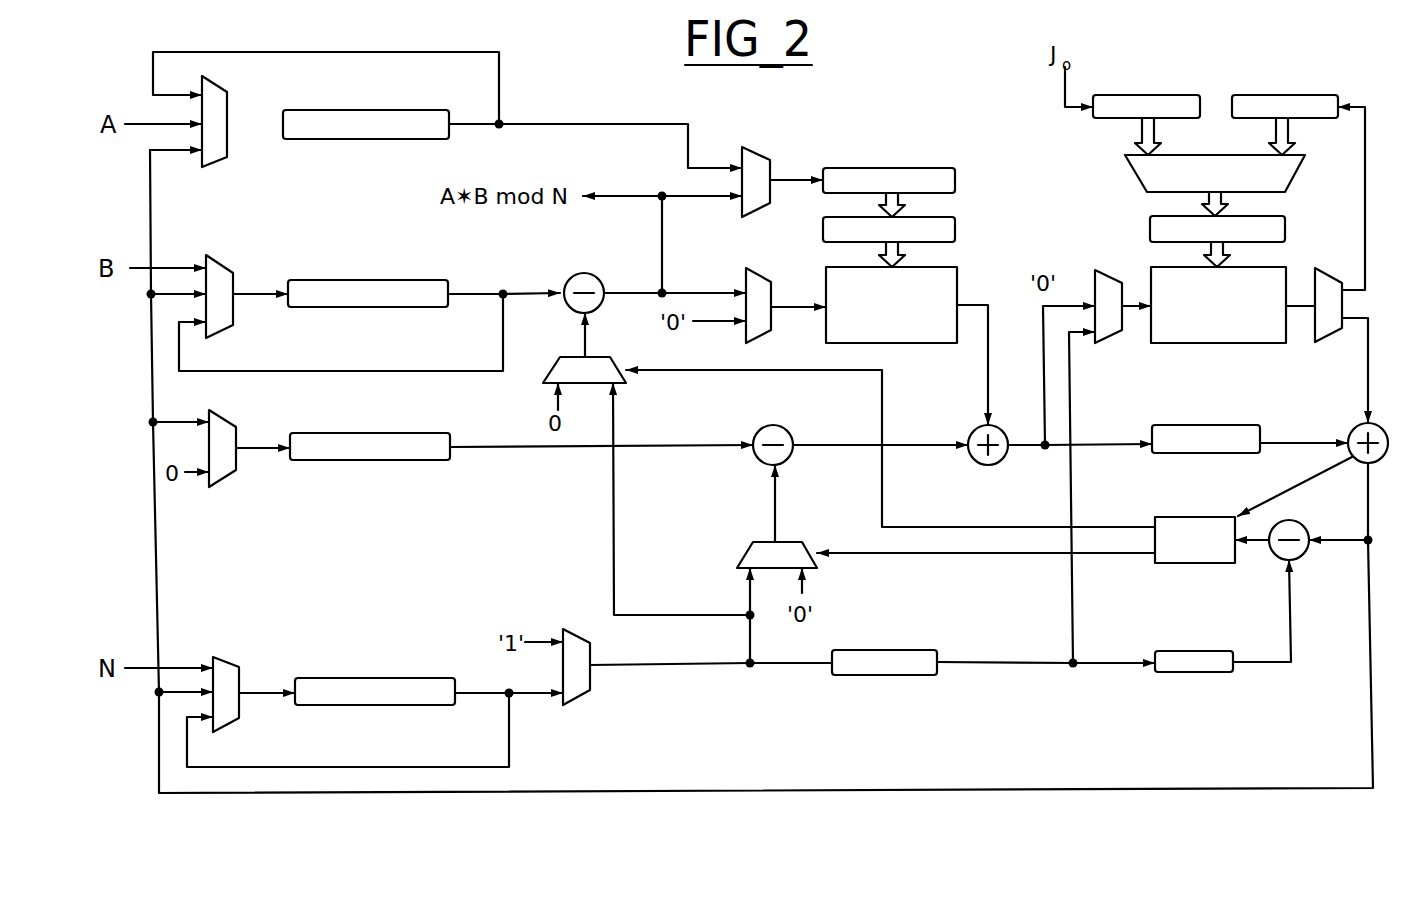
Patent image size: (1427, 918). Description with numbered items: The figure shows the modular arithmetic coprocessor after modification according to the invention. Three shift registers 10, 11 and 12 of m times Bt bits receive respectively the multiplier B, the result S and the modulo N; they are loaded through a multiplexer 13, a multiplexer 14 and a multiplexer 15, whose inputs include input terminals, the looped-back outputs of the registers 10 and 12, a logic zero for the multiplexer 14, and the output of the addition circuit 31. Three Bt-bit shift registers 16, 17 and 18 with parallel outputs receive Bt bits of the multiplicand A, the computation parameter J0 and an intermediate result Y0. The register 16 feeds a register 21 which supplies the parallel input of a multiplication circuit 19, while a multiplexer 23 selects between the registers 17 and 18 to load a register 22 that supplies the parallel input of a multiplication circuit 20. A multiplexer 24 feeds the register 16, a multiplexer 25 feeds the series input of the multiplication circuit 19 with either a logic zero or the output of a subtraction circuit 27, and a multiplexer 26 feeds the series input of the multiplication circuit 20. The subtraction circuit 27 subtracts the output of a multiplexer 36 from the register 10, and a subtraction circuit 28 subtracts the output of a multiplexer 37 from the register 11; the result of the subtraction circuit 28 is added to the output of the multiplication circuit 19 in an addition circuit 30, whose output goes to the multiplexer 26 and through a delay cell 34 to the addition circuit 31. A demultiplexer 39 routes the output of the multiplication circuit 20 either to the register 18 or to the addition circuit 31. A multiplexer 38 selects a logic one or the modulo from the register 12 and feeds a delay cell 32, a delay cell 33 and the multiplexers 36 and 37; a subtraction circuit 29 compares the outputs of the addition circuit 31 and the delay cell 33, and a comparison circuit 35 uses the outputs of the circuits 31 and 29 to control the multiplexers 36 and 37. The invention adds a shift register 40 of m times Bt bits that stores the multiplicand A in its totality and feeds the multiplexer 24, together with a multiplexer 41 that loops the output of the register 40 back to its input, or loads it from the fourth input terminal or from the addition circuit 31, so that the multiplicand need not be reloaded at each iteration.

The shift register 10 is at (353, 280).
The shift register 11 is at (365, 460).
The shift register 12 is at (375, 678).
The multiplexer 13 is at (222, 257).
The multiplexer 14 is at (228, 484).
The multiplexer 15 is at (228, 657).
The shift register 16 is at (955, 180).
The shift register 17 is at (1153, 95).
The shift register 18 is at (1287, 95).
The multiplication circuit 19 is at (925, 343).
The multiplication circuit 20 is at (1215, 343).
The register 21 is at (955, 229).
The register 22 is at (1285, 229).
The multiplexer 23 is at (1300, 172).
The multiplexer 24 is at (757, 147).
The multiplexer 25 is at (757, 268).
The multiplexer 26 is at (1100, 270).
The subtraction circuit 27 is at (582, 273).
The subtraction circuit 28 is at (778, 425).
The subtraction circuit 29 is at (1295, 520).
The addition circuit 30 is at (982, 465).
The addition circuit 31 is at (1388, 450).
The delay cell 32 is at (885, 675).
The delay cell 33 is at (1193, 672).
The delay cell 34 is at (1200, 453).
The comparison circuit 35 is at (1190, 563).
The multiplexer 36 is at (545, 372).
The multiplexer 37 is at (795, 542).
The multiplexer 38 is at (585, 702).
The demultiplexer 39 is at (1330, 342).
The shift register 40 is at (348, 139).
The multiplexer 41 is at (214, 164).